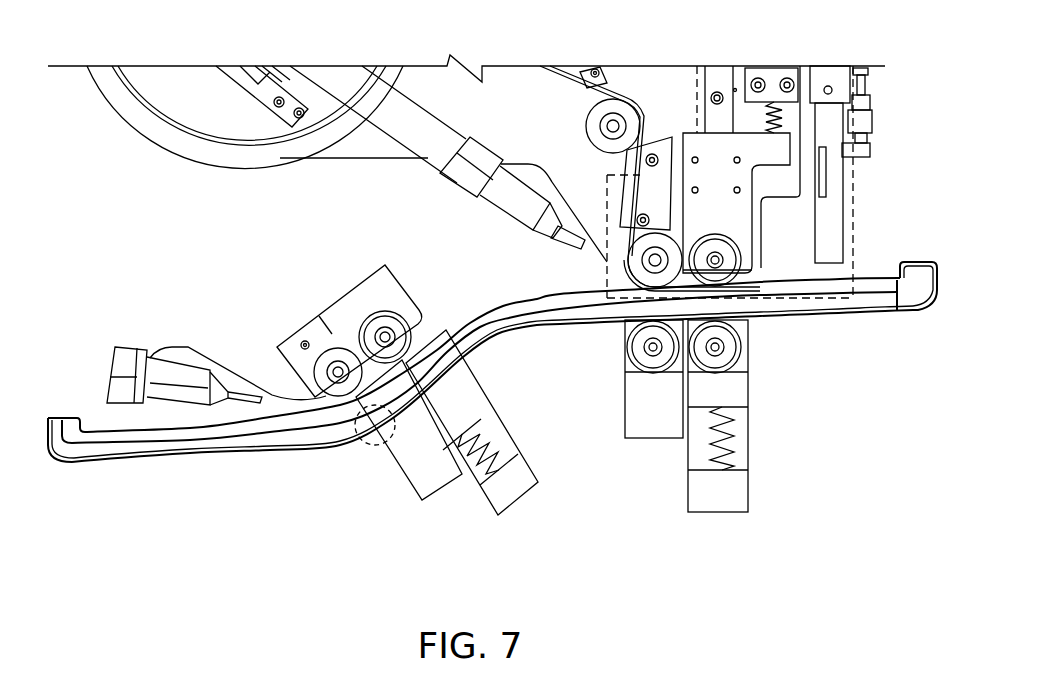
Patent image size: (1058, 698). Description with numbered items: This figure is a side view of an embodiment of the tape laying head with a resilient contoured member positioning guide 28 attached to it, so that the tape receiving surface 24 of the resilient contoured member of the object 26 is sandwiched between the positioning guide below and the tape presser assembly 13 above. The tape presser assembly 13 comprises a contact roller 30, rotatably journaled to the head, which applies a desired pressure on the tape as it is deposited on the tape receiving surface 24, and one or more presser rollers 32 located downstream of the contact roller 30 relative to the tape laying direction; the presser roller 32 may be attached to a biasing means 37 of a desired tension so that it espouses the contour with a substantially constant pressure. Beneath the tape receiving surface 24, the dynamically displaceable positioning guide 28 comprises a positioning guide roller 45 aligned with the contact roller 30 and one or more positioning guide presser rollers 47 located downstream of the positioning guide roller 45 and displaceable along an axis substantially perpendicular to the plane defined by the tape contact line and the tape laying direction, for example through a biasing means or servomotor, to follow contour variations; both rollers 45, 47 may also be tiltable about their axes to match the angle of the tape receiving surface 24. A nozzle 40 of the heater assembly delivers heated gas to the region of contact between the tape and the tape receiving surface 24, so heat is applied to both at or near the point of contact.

The tape presser assembly 13 is at (855, 218).
The tape receiving surface 24 is at (468, 318).
The object 26 is at (785, 305).
The resilient contoured member positioning guide 28 is at (648, 413).
The contact roller 30 is at (643, 261).
The presser roller 32 is at (740, 250).
The biasing means 37 is at (766, 118).
The nozzle 40 is at (395, 120).
The positioning guide roller 45 is at (625, 353).
The positioning guide presser roller 47 is at (737, 367).